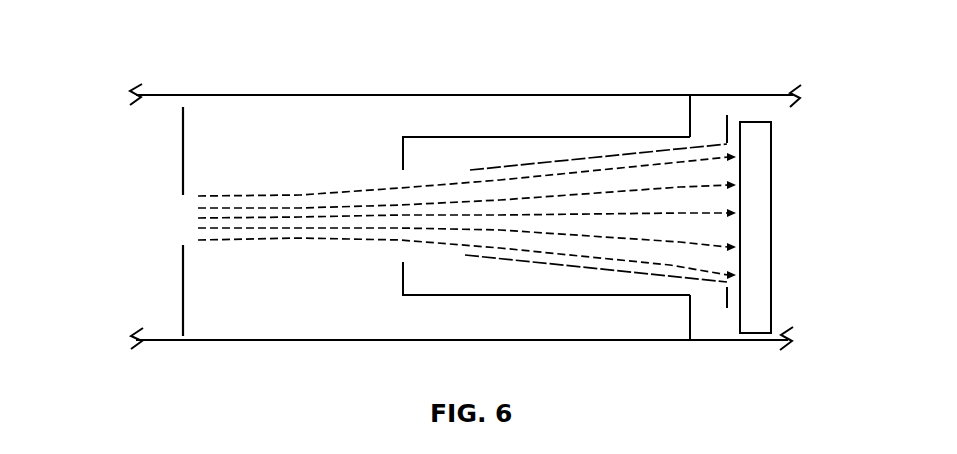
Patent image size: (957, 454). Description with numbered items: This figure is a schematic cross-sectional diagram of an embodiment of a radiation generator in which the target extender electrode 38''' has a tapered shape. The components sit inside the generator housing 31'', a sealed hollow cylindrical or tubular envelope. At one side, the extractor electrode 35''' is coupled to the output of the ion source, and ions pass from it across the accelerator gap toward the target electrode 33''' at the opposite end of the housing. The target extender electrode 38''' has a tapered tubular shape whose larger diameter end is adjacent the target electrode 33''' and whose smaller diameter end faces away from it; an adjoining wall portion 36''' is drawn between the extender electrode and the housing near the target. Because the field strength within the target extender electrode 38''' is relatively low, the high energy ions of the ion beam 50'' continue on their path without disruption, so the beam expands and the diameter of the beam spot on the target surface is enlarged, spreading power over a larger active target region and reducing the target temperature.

The generator housing 31'' is at (454, 249).
The target electrode 33''' is at (825, 227).
The extractor electrode 35''' is at (104, 221).
The wall 36''' is at (754, 186).
The target extender electrode 38''' is at (546, 157).
The ion beam 50'' is at (467, 156).